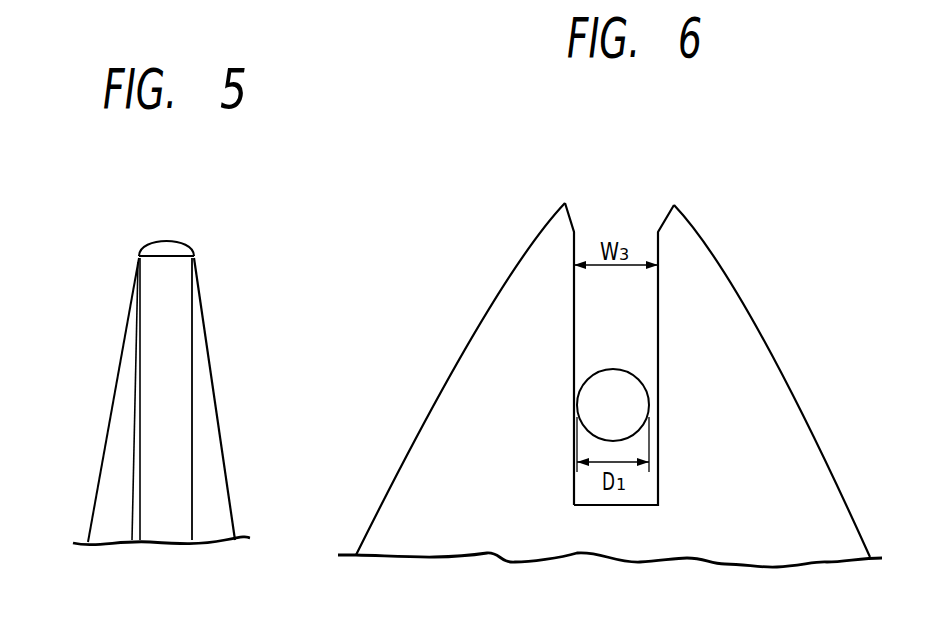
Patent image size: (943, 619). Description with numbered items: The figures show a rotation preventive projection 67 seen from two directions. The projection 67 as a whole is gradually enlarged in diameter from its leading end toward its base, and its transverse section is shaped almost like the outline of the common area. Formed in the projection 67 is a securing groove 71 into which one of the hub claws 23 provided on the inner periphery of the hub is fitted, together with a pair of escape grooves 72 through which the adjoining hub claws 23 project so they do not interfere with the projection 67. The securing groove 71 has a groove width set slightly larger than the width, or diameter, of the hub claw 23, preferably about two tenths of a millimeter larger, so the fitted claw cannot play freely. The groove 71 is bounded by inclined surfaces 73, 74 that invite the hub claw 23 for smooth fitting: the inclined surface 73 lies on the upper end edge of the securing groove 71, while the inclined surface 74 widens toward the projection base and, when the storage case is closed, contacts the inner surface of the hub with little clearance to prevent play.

In FIG. 5, the rotation preventive projection 67 is at (207, 272).
In FIG. 6, the rotation preventive projection 67 is at (750, 284).
In FIG. 6, the securing groove 71 is at (652, 240).
In FIG. 6, the inclined surface 73 is at (570, 212).
In FIG. 5, the escape groove 72 is at (182, 368).
In FIG. 5, the inclined surface 74 is at (118, 368).
In FIG. 6, the hub claw 23 is at (610, 377).